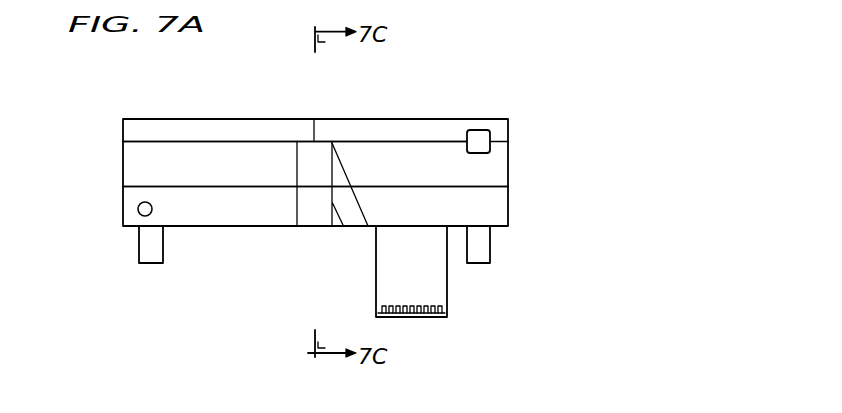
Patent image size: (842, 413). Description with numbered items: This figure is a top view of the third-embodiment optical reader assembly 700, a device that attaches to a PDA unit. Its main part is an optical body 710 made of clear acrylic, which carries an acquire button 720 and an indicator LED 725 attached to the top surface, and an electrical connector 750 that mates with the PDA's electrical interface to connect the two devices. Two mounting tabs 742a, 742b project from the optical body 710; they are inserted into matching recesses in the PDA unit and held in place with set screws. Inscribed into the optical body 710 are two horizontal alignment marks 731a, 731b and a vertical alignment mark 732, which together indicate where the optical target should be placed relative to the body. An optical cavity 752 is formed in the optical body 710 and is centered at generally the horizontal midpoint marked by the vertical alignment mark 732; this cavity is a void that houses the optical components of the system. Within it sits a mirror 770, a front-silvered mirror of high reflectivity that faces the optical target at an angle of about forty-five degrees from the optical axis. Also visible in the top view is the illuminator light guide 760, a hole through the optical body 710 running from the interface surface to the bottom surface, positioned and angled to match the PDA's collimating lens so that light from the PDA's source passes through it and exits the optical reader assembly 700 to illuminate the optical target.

The optical reader assembly 700 is at (397, 110).
The optical body 710 is at (508, 168).
The acquire button 720 is at (477, 130).
The indicator LED 725 is at (137, 210).
The horizontal alignment mark 731a is at (188, 130).
The horizontal alignment mark 731b is at (177, 186).
The vertical alignment mark 732 is at (326, 135).
The mounting tab 742a is at (150, 267).
The mounting tab 742b is at (478, 267).
The electrical connector 750 is at (418, 318).
The optical cavity 752 is at (313, 210).
The illuminator light guide 760 is at (358, 227).
The mirror 770 is at (304, 157).